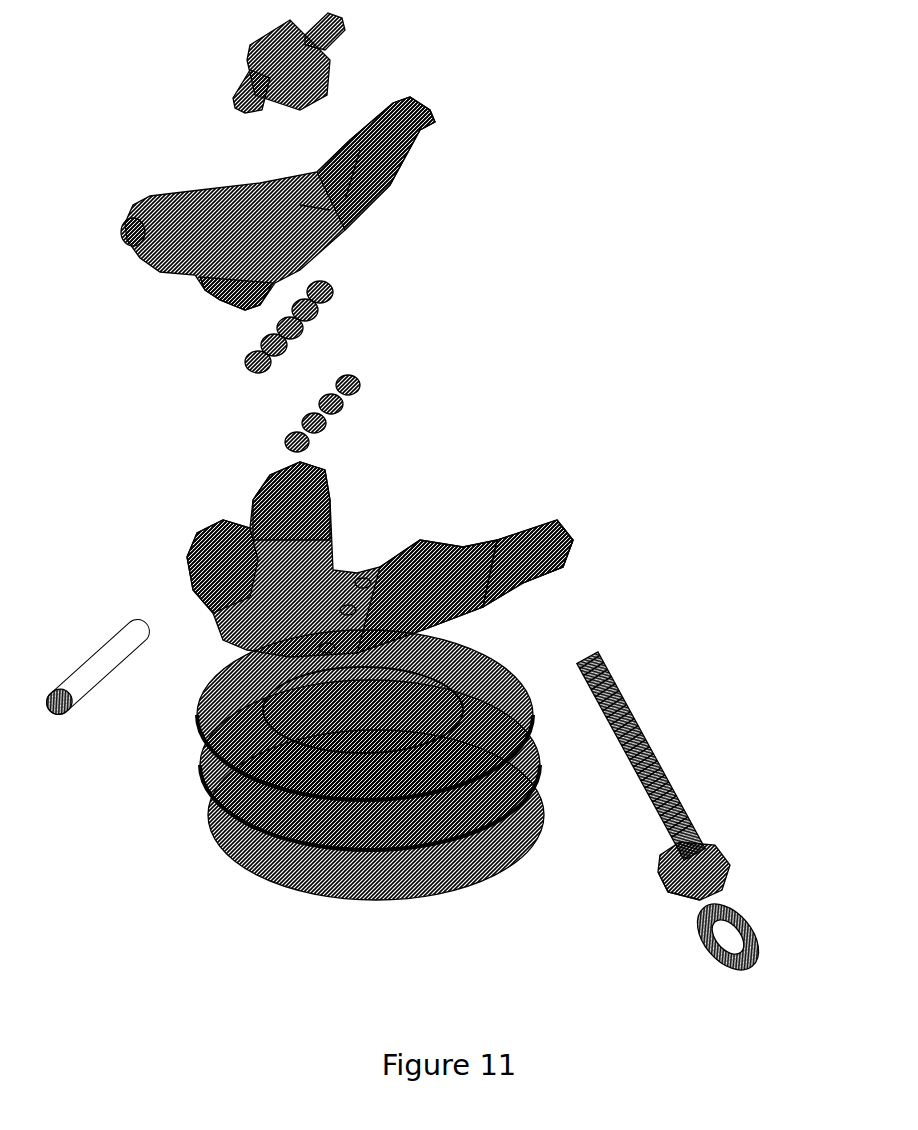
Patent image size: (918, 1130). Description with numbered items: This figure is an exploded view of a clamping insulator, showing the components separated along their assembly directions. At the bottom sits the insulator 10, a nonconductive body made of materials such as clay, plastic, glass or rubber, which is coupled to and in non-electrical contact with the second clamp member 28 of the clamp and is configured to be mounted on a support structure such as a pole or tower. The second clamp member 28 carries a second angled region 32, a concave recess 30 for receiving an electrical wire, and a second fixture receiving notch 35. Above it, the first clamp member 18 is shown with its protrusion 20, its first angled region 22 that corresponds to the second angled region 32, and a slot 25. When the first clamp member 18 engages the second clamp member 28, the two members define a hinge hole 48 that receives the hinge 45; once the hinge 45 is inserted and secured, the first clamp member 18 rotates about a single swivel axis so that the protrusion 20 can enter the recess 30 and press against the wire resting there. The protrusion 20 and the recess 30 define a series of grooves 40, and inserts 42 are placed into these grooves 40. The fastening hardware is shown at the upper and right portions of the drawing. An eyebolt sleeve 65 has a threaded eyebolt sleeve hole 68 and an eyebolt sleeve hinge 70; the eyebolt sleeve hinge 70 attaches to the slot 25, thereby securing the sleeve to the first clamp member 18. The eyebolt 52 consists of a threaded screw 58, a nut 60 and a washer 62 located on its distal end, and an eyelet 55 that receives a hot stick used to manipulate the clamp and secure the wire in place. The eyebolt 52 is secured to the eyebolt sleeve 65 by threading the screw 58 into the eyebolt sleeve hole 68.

The insulator 10 is at (235, 855).
The first clamp member 18 is at (163, 185).
The protrusion 20 is at (232, 288).
The first angled region 22 is at (423, 133).
The slot 25 is at (313, 200).
The second clamp member 28 is at (430, 542).
The recess 30 is at (330, 650).
The second angled region 32 is at (514, 537).
The second fixture receiving notch 35 is at (523, 572).
The grooves 40 is at (325, 650).
The inserts 42 is at (272, 365).
The hinge 45 is at (92, 670).
The hinge hole 48 is at (277, 510).
The eyebolt 52 is at (627, 776).
The eyelet 55 is at (707, 942).
The threaded screw 58 is at (615, 735).
The nut 60 is at (732, 863).
The washer 62 is at (657, 870).
The eyebolt sleeve 65 is at (320, 72).
The eyebolt sleeve hole 68 is at (267, 32).
The eyebolt sleeve hinge 70 is at (257, 103).